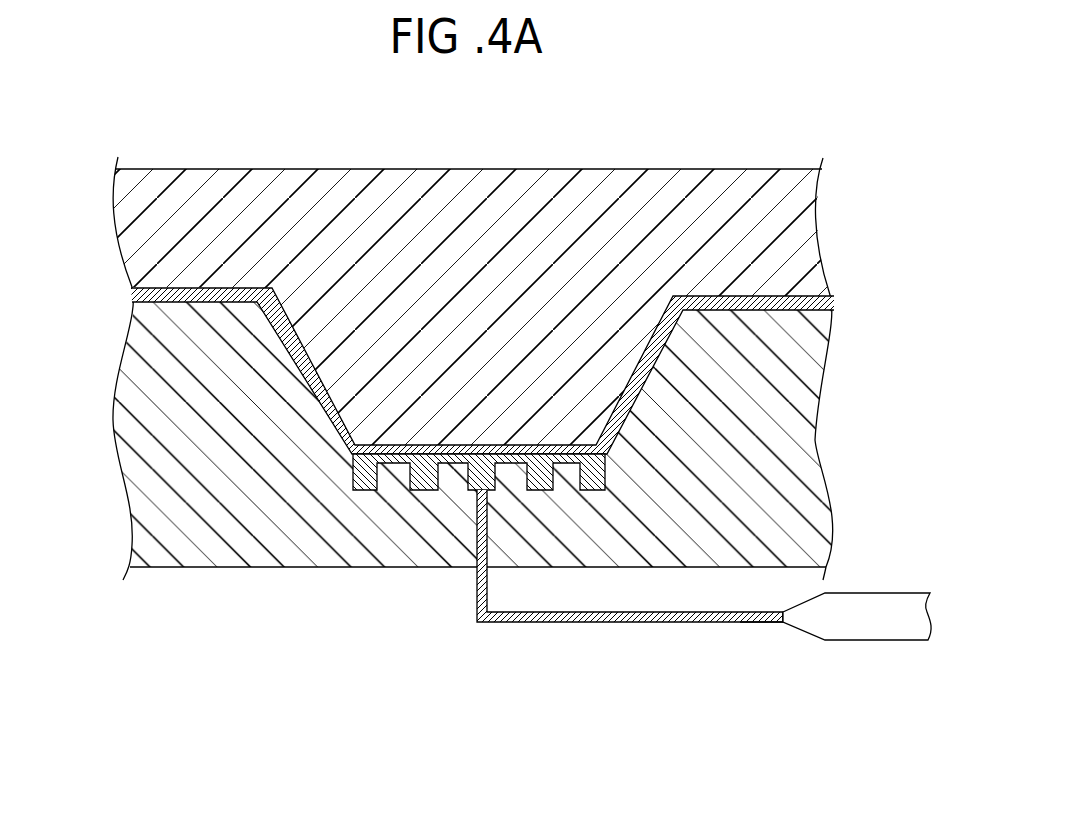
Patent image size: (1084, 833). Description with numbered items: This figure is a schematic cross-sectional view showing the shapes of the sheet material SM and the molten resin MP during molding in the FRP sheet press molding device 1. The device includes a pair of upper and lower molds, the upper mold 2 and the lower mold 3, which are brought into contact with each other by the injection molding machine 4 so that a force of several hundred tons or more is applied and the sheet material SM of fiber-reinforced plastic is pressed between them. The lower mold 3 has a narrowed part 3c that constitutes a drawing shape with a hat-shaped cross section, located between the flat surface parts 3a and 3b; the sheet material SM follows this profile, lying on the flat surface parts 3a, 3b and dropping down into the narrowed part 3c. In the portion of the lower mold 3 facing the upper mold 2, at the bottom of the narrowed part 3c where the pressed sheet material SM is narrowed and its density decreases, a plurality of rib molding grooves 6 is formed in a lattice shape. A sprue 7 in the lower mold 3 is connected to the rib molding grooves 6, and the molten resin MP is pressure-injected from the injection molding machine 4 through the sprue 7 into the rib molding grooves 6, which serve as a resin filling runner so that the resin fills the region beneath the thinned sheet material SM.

The FRP sheet press molding device 1 is at (862, 154).
The upper mold 2 is at (130, 200).
The lower mold 3 is at (444, 452).
The flat surface part 3a is at (230, 333).
The flat surface part 3b is at (752, 338).
The narrowed part 3c is at (436, 500).
The injection molding machine 4 is at (893, 598).
The rib molding grooves 6 is at (596, 490).
The sprue 7 is at (605, 622).
The sheet material SM is at (833, 300).
The molten resin MP is at (742, 622).